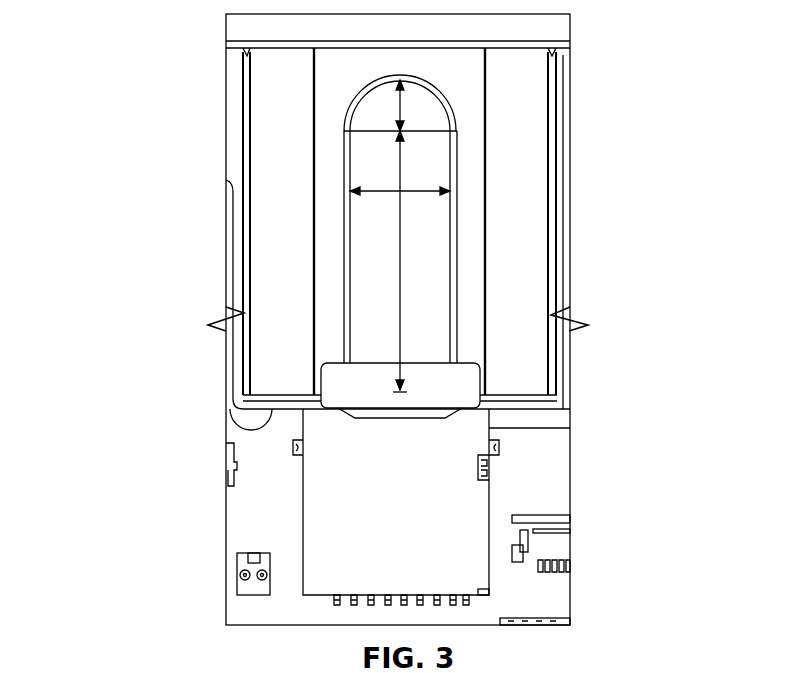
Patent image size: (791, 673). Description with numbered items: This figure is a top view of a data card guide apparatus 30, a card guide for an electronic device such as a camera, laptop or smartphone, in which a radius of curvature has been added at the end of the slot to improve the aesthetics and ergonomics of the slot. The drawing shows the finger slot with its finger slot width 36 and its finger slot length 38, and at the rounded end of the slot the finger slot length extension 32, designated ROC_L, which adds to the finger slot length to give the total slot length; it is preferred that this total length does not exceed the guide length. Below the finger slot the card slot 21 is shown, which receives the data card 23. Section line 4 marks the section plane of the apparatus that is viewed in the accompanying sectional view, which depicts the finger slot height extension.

The data card guide apparatus 30 is at (146, 20).
The finger slot length extension ROC_L 32 is at (400, 100).
The finger slot width 36 is at (415, 191).
The finger slot length 38 is at (400, 322).
The card slot 21 is at (450, 388).
The data card 23 is at (336, 584).
The section line 4- 4 is at (222, 302).